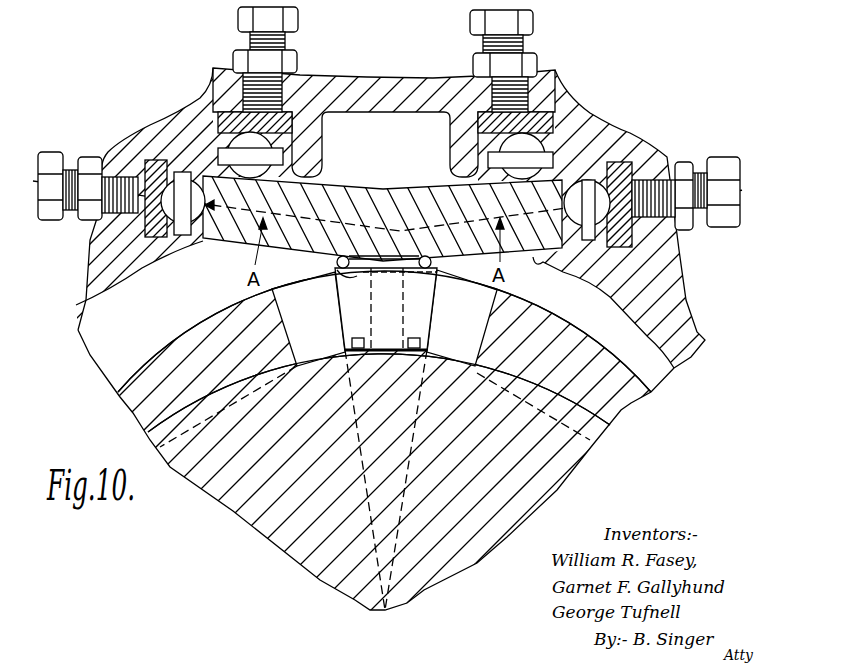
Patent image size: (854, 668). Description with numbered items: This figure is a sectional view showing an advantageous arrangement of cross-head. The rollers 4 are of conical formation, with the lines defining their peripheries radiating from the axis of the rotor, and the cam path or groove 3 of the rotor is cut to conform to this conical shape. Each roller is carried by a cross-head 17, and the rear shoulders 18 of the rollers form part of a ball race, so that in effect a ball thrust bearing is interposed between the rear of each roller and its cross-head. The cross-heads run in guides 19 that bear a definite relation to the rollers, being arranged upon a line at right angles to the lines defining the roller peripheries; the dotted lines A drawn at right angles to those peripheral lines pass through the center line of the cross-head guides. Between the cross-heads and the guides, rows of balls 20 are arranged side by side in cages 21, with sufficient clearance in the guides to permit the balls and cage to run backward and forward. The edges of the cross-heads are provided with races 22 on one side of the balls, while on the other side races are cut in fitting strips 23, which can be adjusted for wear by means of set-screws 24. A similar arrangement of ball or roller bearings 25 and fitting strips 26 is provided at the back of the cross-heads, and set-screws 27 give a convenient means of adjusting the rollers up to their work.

The cam path or groove 3 is at (462, 318).
The rollers 4 is at (347, 318).
The cross-heads 17 is at (377, 217).
The rear shoulders 18 is at (335, 270).
The guides 19 is at (145, 238).
The balls 20 is at (163, 210).
The cages 21 is at (182, 236).
The races 22 is at (214, 205).
The fitting strips 23 is at (155, 182).
The set-screws 24 is at (43, 193).
The ball or roller bearings 25 is at (230, 150).
The fitting strips 26 is at (227, 113).
The set-screws 27 is at (293, 25).